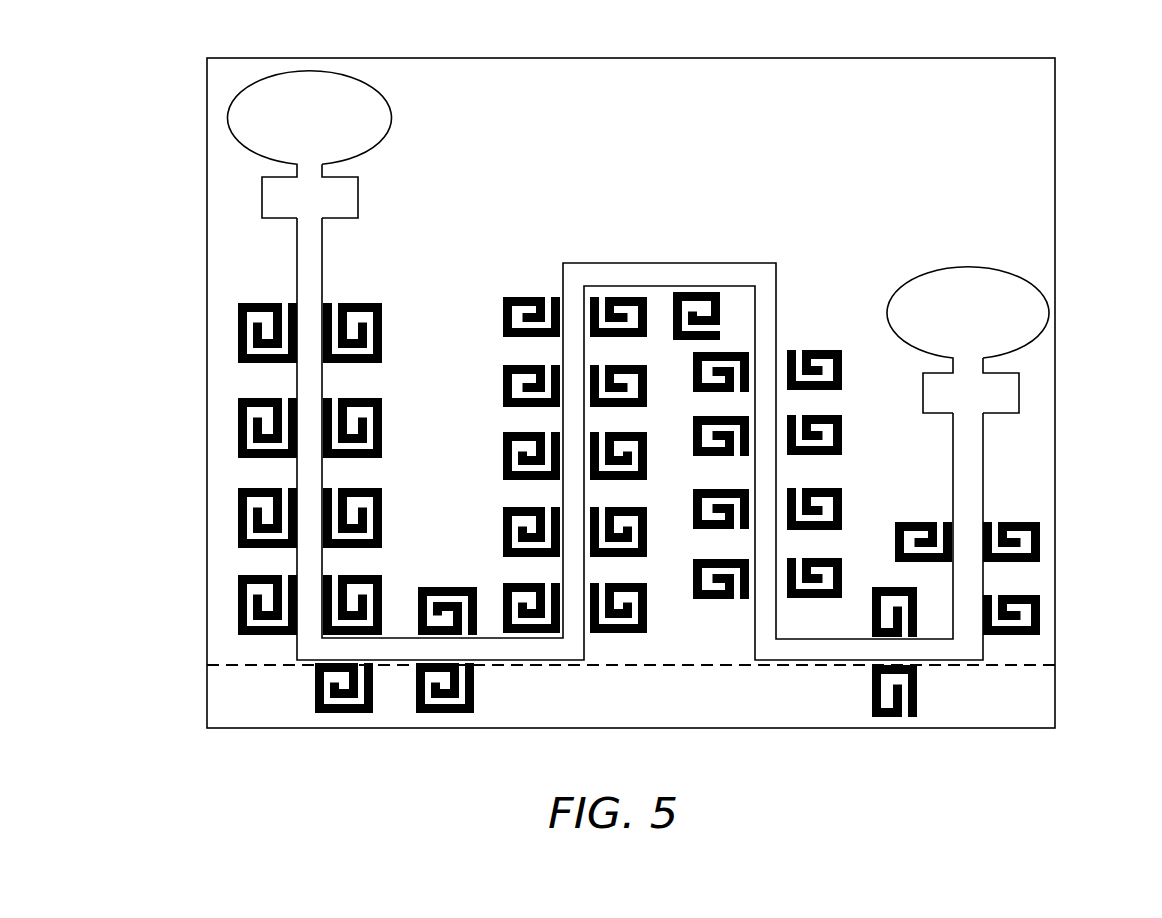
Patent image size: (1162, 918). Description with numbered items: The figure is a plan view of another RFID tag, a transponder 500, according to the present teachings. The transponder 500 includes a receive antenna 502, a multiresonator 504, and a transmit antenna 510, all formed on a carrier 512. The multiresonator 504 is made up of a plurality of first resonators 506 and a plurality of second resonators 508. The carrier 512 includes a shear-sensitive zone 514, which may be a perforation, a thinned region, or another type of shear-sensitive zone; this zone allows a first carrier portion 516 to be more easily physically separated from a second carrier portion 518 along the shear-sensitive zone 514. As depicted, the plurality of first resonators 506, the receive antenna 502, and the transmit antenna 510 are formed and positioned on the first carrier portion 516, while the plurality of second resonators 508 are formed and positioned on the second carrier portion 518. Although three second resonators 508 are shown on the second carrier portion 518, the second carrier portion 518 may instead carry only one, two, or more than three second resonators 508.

The transponder 500 is at (191, 102).
The receive antenna 502 is at (372, 117).
The multiresonator 504 is at (199, 367).
The first resonators 506 is at (237, 327).
The second resonators 508 is at (430, 713).
The transmit antenna 510 is at (962, 285).
The carrier 512 is at (1040, 125).
The shear-sensitive zone 514 is at (228, 662).
The first carrier portion 516 is at (242, 648).
The second carrier portion 518 is at (218, 700).